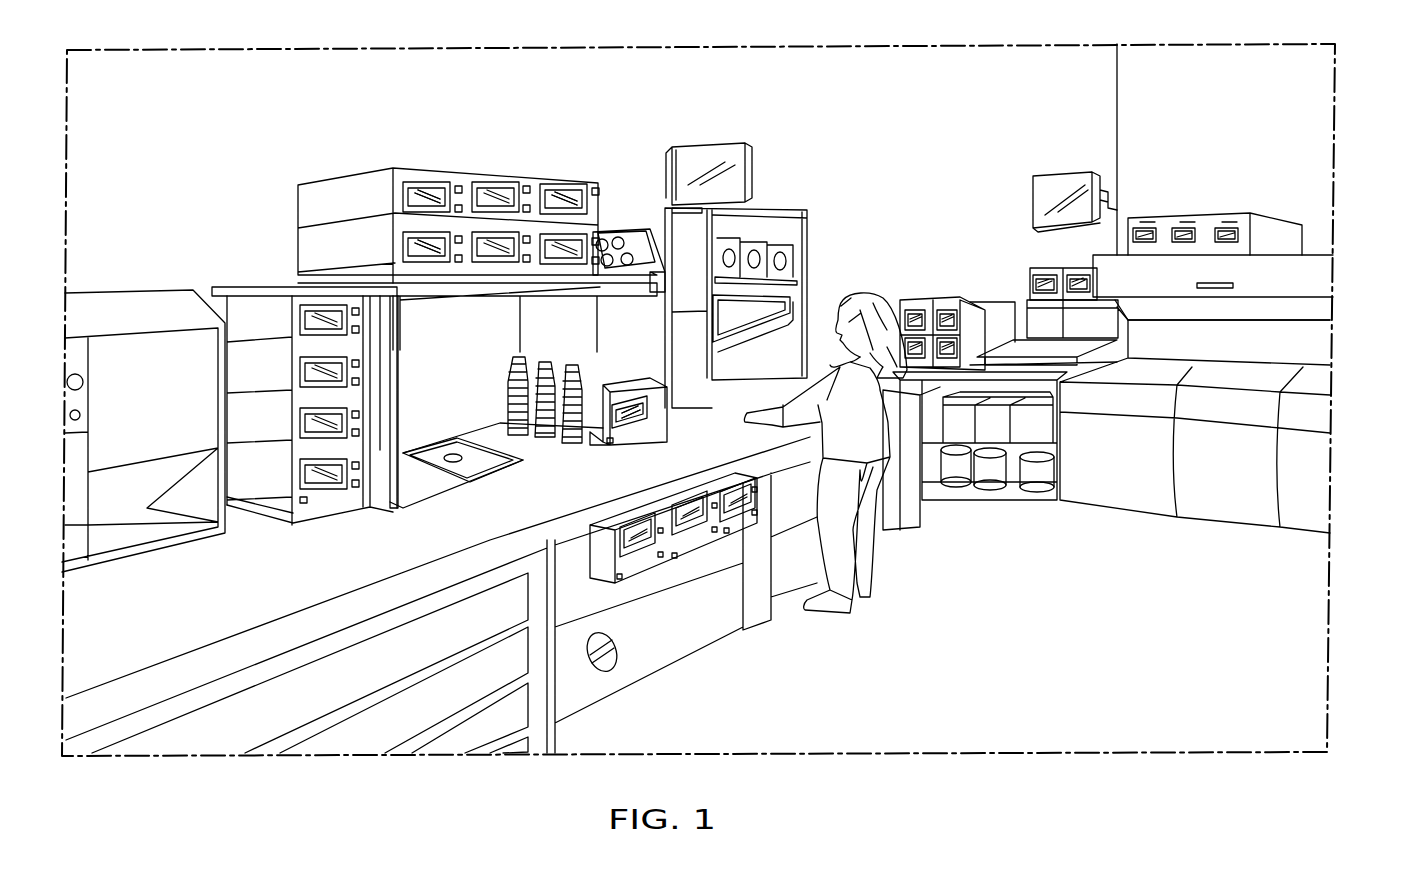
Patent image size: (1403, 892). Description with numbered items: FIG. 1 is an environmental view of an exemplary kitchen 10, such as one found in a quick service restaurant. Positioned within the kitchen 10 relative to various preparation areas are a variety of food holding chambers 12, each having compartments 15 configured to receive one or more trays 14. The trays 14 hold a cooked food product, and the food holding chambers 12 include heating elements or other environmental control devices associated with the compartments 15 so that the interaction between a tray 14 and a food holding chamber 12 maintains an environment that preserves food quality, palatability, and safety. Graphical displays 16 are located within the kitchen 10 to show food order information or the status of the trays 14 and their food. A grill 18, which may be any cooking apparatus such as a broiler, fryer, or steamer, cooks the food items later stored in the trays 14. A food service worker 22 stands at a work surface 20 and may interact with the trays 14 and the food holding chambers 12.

The kitchen 10 is at (1078, 643).
The food holding chamber 12 is at (256, 242).
The tray 14 is at (300, 545).
The compartment 15 is at (400, 240).
The graphical display 16 is at (718, 160).
The grill 18 is at (1278, 356).
The work surface / counter top 20 is at (735, 425).
The food service worker 22 is at (835, 380).